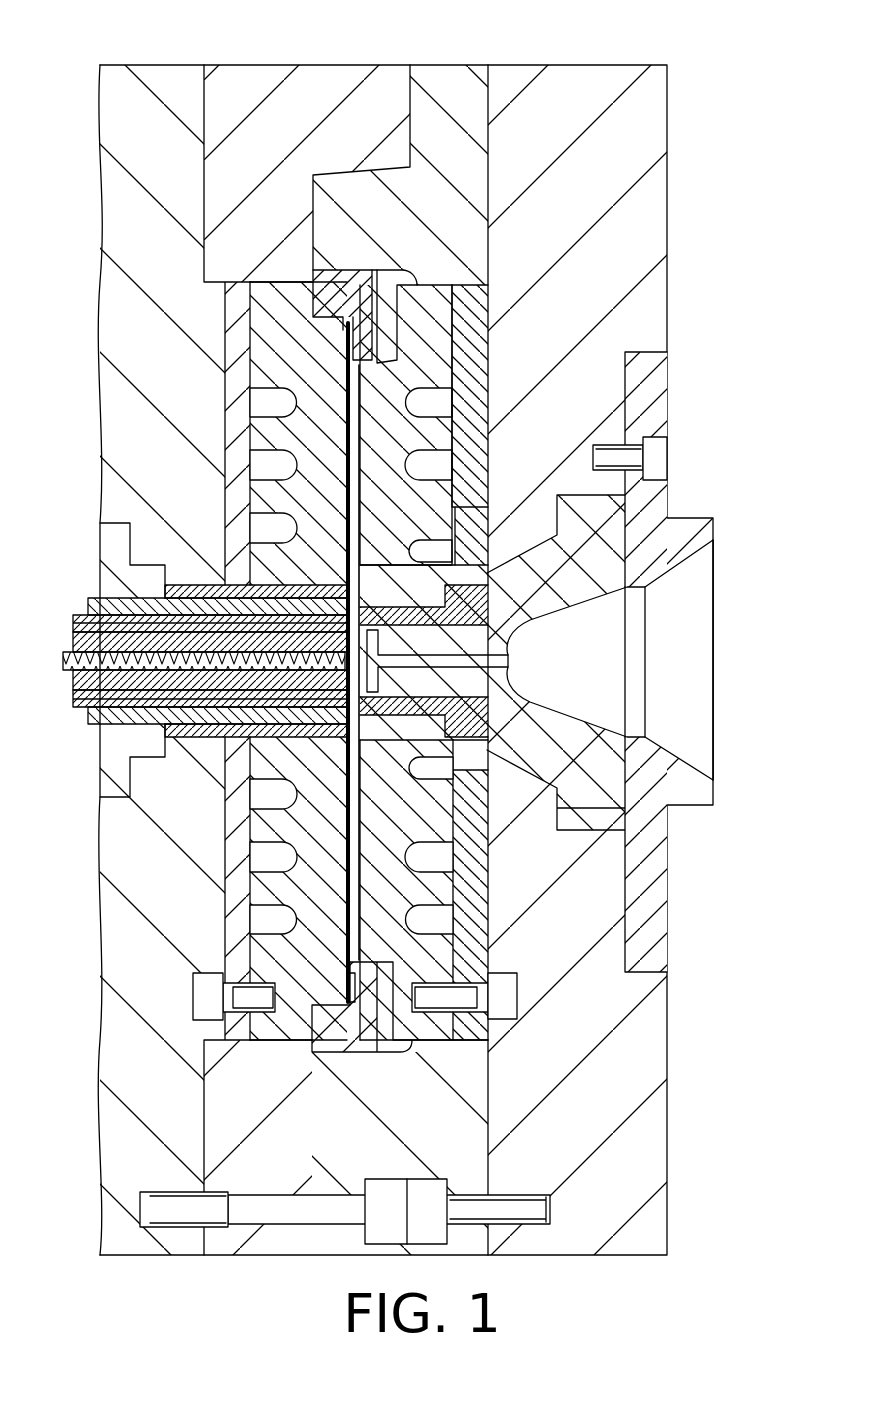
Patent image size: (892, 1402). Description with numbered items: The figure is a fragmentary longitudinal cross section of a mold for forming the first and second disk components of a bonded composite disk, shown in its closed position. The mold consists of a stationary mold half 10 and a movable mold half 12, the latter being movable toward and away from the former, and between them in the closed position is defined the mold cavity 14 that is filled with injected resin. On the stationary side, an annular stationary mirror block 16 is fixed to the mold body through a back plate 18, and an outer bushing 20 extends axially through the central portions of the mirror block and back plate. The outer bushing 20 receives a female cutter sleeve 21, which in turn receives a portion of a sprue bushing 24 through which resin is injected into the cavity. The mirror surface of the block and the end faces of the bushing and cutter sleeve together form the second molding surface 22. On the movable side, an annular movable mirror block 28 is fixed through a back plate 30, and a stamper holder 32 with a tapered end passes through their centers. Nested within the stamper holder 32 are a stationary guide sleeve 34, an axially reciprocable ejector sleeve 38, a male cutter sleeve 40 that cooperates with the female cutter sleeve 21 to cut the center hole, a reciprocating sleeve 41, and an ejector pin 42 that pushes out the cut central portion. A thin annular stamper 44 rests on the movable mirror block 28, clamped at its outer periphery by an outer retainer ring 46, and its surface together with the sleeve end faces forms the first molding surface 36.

The stationary mold half 10 is at (594, 62).
The movable mold half 12 is at (158, 62).
The mold cavity 14 is at (440, 435).
The stationary mirror block 16 is at (440, 360).
The back plate 18 is at (470, 937).
The outer bushing 20 is at (580, 795).
The female cutter sleeve 21 is at (500, 620).
The second molding surface 22 is at (470, 895).
The sprue bushing 24 is at (580, 737).
The movable mirror block 28 is at (275, 352).
The back plate 30 is at (230, 905).
The stamper holder 32 is at (190, 742).
The stationary guide sleeve 34 is at (110, 548).
The first molding surface 36 is at (345, 582).
The ejector sleeve 38 is at (125, 610).
The male cutter sleeve 40 is at (93, 695).
The reciprocating sleeve 41 is at (83, 642).
The ejector pin 42 is at (75, 660).
The stamper 44 is at (400, 845).
The outer retainer ring 46 is at (350, 1052).